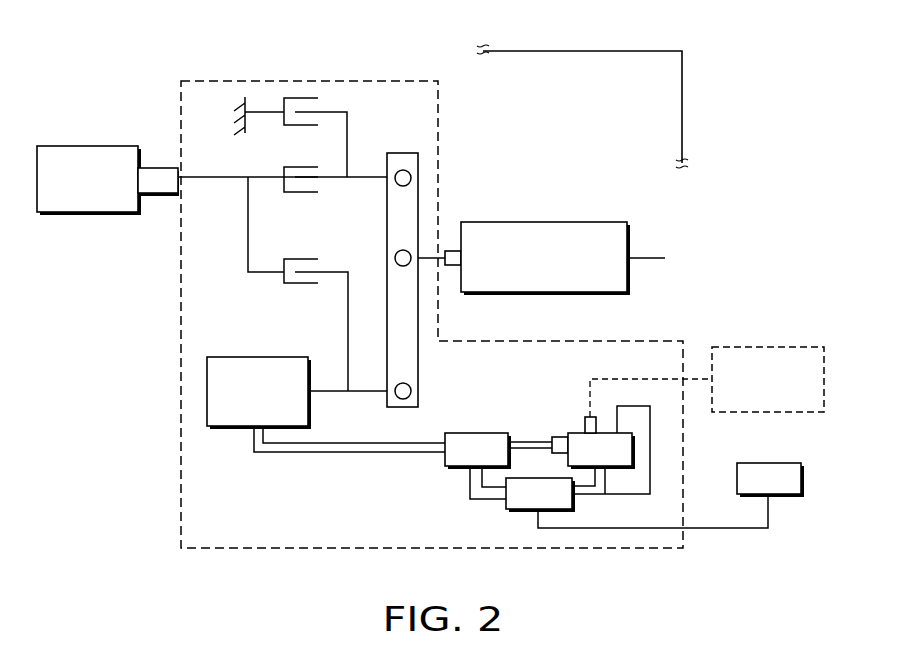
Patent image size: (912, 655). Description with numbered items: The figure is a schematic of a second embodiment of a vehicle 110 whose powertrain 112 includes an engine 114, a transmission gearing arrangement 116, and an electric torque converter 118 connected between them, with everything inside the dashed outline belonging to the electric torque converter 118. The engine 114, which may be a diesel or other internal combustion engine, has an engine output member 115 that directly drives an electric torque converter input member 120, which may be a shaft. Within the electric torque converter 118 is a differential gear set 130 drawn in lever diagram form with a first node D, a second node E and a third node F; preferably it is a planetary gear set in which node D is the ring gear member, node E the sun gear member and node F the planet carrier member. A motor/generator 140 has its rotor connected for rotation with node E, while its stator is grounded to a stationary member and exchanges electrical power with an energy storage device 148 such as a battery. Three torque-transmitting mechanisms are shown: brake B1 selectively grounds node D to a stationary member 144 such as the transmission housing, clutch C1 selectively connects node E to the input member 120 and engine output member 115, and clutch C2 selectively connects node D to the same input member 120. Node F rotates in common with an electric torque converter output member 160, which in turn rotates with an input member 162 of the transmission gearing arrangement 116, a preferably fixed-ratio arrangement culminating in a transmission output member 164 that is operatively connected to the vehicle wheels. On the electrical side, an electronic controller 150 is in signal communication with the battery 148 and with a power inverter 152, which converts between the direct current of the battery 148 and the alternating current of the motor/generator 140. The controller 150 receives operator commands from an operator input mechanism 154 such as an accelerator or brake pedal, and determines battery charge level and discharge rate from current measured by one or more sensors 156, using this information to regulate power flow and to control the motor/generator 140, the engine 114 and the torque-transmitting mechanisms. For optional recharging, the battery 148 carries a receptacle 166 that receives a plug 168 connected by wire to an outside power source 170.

The vehicle 110 is at (683, 112).
The powertrain 112 is at (167, 58).
The engine 114 is at (88, 145).
The engine output member 115 is at (160, 167).
The transmission gearing arrangement 116 is at (545, 221).
The electric torque converter 118 is at (384, 80).
The electric torque converter input member 120 is at (229, 181).
The differential gear set 130 is at (418, 255).
The motor/generator 140 is at (297, 393).
The stationary member 144 is at (238, 96).
The energy storage device 148 is at (620, 467).
The electronic controller 150 is at (526, 510).
The power inverter 152 is at (455, 468).
The operator input mechanism 154 is at (768, 462).
The sensor 156 is at (560, 436).
The electric torque converter output member 160 is at (430, 257).
The input member 162 is at (452, 250).
The transmission output member 164 is at (648, 257).
The receptacle 166 is at (585, 425).
The plug 168 is at (585, 416).
The outside power source 170 is at (768, 346).
The brake B1 is at (300, 94).
The clutch C1 is at (300, 295).
The clutch C2 is at (300, 197).
The first node D is at (401, 169).
The second node E is at (403, 382).
The third node F is at (402, 267).